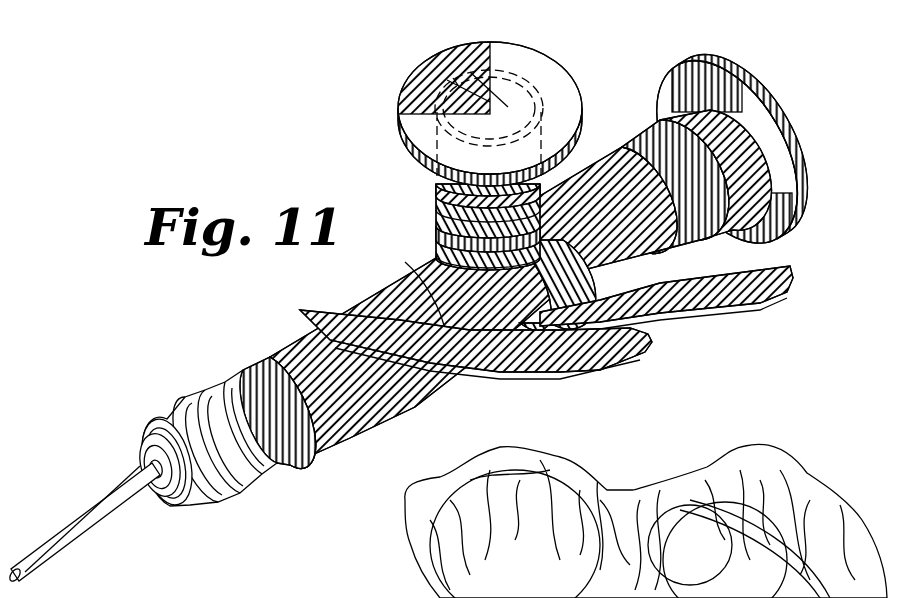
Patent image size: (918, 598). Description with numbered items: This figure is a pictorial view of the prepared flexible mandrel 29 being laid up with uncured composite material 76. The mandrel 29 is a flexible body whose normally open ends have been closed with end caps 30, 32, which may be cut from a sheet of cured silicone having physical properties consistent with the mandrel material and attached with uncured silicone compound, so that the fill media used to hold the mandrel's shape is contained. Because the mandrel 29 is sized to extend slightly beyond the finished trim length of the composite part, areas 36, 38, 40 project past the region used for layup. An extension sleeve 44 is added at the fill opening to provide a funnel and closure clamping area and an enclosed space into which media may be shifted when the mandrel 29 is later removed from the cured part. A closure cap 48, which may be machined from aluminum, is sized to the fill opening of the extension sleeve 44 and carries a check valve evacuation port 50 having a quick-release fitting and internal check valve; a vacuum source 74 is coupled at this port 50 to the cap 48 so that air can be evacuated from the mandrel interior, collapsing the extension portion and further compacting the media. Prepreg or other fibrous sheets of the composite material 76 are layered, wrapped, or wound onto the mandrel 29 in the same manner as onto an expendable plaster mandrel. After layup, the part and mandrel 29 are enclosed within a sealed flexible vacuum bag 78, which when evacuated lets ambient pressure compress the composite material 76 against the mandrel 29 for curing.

The mandrel 29 is at (381, 432).
The end cap 30 is at (552, 77).
The end cap 32 is at (700, 62).
The area extending beyond trim length 36 is at (240, 372).
The area extending beyond trim length 38 is at (398, 118).
The area extending beyond trim length 40 is at (747, 128).
The extension sleeve 44 is at (188, 418).
The closure cap 48 is at (173, 508).
The check valve evacuation port 50 is at (177, 503).
The vacuum source 74 is at (50, 540).
The composite material 76 is at (725, 308).
The vacuum bag 78 is at (647, 490).